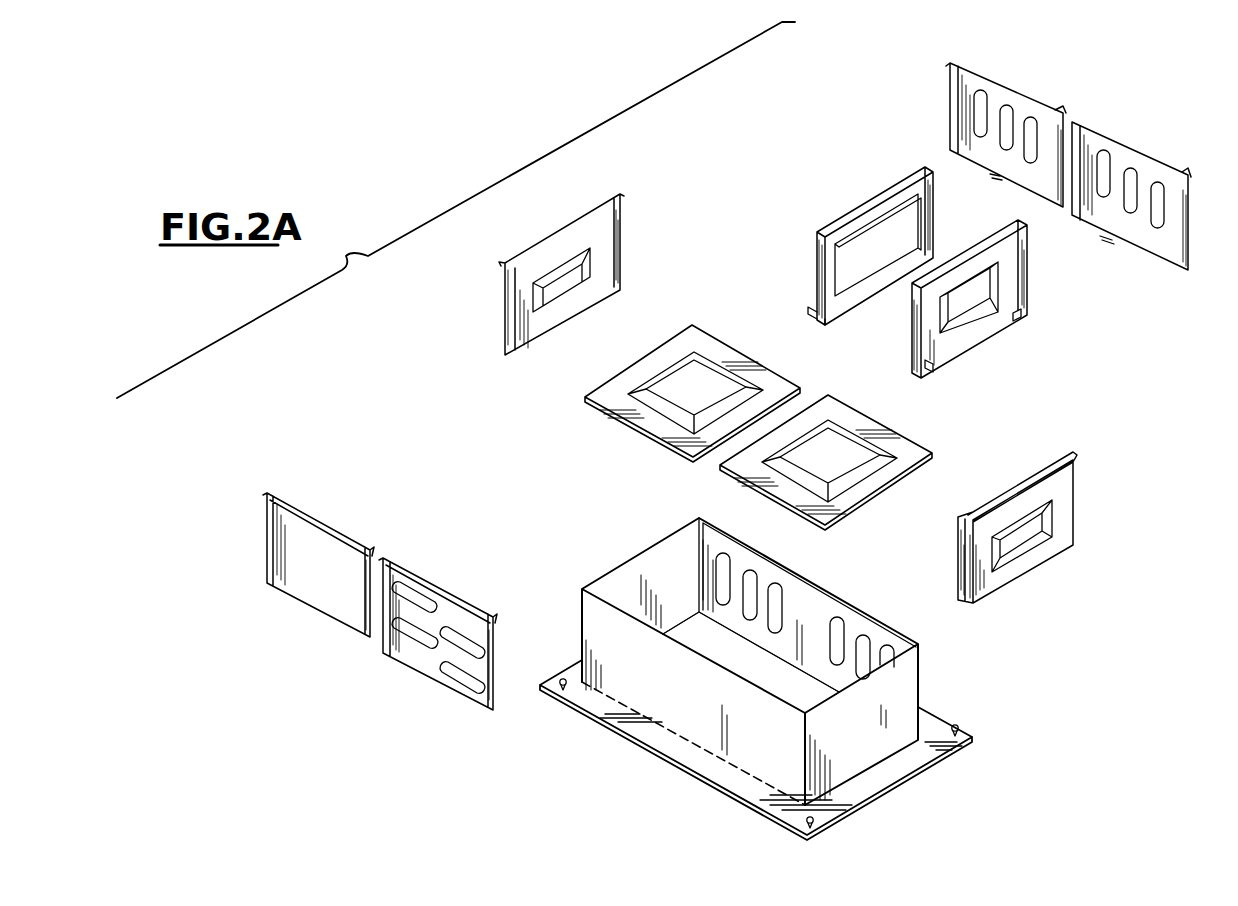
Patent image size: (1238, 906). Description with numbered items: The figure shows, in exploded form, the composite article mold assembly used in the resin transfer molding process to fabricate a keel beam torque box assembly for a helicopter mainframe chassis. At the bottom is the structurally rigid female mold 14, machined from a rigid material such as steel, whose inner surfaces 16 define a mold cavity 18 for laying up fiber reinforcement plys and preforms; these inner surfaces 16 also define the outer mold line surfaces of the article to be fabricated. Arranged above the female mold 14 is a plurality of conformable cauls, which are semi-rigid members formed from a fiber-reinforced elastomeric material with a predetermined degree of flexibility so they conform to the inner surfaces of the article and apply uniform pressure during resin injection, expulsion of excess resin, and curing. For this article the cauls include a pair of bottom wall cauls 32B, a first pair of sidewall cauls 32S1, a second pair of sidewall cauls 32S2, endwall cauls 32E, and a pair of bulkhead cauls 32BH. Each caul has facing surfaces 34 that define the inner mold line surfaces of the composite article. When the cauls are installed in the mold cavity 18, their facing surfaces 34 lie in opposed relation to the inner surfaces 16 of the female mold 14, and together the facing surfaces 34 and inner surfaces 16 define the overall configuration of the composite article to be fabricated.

The female mold 14 is at (778, 750).
The inner surfaces 16 is at (820, 608).
The mold cavity 18 is at (715, 607).
The bottom wall cauls 32B is at (758, 427).
The bulkhead cauls 32BH is at (917, 276).
The first pair of sidewall cauls 32S1 is at (1068, 166).
The endwall cauls 32E is at (792, 398).
The second pair of sidewall cauls 32S2 is at (380, 614).
The facing surfaces 34 is at (678, 449).